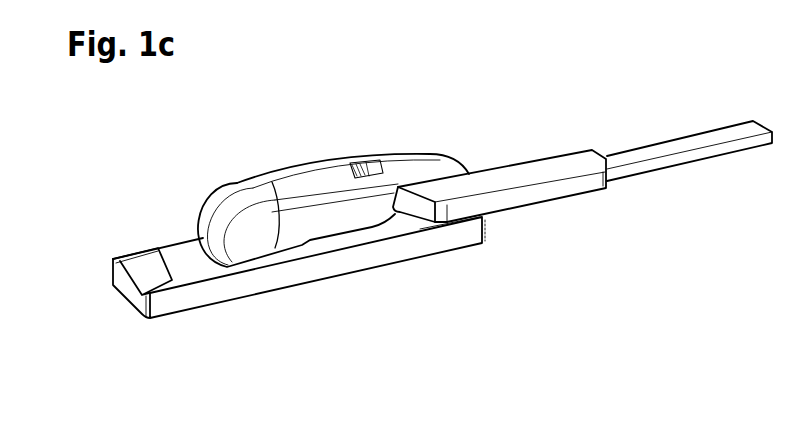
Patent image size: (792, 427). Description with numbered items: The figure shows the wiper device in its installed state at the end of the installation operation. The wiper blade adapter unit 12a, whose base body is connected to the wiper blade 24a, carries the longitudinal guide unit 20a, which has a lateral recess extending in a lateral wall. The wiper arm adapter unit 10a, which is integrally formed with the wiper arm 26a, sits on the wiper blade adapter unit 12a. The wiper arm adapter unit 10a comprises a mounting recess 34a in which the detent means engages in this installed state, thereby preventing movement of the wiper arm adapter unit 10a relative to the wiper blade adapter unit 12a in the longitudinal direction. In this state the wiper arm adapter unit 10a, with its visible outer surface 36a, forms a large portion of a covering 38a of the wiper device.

The wiper arm adapter unit 10a is at (333, 162).
The wiper blade adapter unit 12a is at (422, 208).
The longitudinal guide unit 20a is at (279, 288).
The wiper blade 24a is at (130, 292).
The wiper arm 26a is at (540, 175).
The mounting recess 34a is at (377, 164).
The visible outer surface 36a is at (291, 180).
The covering 38a is at (230, 135).